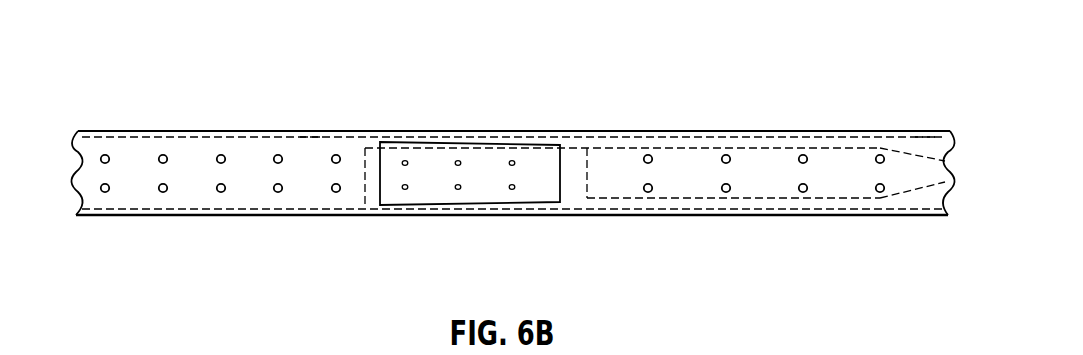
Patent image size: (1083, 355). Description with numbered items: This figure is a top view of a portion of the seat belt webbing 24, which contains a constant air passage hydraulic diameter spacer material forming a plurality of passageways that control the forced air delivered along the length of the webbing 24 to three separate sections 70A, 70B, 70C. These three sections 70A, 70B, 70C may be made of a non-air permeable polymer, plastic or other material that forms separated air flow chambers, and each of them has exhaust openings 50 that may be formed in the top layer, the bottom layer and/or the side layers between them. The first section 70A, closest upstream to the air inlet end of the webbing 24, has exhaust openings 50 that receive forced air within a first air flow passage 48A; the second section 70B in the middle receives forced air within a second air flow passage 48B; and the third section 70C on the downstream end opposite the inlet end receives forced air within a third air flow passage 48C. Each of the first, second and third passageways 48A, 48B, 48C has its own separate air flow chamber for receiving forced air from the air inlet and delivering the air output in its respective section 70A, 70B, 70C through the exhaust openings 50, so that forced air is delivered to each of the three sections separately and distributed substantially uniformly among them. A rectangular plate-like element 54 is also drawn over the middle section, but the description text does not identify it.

The seat belt webbing 24 is at (255, 158).
The first air flow passage 48A is at (903, 165).
The second air flow passage 48B is at (480, 190).
The third air flow passage 48C is at (310, 153).
The exhaust openings 50 is at (107, 192).
The plate 54 is at (535, 153).
The first section 70A is at (737, 105).
The second section 70B is at (492, 105).
The third section 70C is at (190, 105).